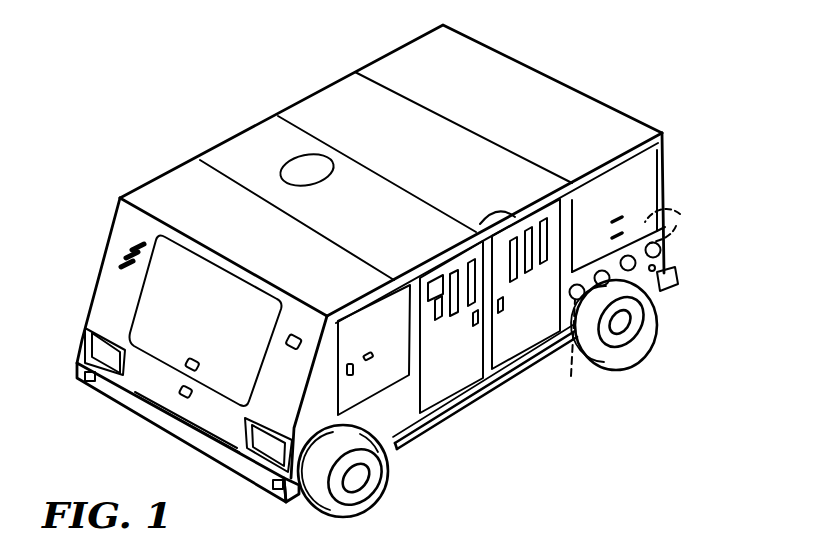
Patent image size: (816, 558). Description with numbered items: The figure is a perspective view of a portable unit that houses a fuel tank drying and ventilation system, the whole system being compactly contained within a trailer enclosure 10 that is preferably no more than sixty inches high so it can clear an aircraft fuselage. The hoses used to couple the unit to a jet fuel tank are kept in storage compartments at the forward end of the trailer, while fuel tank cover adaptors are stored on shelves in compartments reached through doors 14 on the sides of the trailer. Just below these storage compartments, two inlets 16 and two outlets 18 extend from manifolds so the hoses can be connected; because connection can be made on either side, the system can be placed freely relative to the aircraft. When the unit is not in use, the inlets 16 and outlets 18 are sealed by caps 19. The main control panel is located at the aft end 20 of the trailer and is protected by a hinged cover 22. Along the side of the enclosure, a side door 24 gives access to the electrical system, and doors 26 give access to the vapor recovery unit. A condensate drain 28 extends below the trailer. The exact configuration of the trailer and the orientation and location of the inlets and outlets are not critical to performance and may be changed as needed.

The trailer enclosure 10 is at (318, 80).
The doors 14 is at (665, 160).
The inlets 16 is at (682, 214).
The outlets 18 is at (571, 355).
The caps 19 is at (620, 262).
The aft end 20 is at (107, 285).
The hinged cover 22 is at (217, 327).
The side door 24 is at (380, 317).
The doors 26 is at (463, 260).
The condensate drain 28 is at (530, 378).